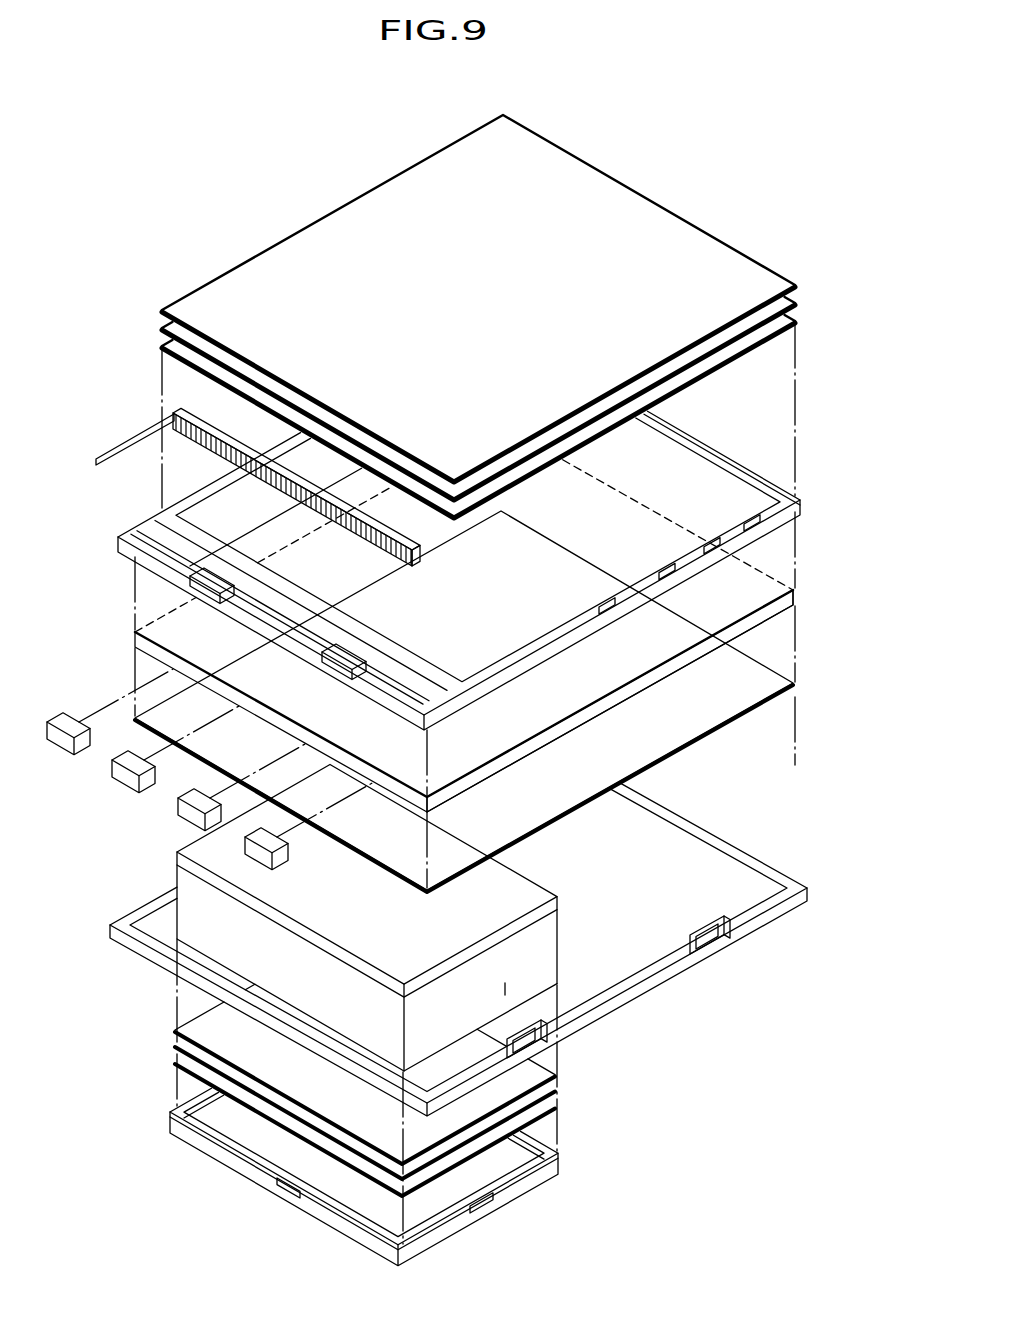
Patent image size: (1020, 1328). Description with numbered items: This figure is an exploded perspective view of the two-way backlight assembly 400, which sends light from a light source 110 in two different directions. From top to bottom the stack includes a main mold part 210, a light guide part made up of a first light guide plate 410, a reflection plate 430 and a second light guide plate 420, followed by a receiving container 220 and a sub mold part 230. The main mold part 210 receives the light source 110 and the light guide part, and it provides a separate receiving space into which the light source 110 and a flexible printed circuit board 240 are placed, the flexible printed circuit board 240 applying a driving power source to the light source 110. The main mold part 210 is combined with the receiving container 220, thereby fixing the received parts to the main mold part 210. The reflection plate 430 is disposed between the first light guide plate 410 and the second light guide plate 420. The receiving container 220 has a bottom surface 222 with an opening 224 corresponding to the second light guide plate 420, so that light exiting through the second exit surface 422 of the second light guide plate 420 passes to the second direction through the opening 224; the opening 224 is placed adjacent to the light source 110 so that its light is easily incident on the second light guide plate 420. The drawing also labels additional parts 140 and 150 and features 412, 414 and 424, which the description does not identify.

The two-way backlight assembly 400 is at (333, 170).
The display panel 140 is at (800, 287).
The main mold part 210 is at (768, 463).
The flexible printed circuit board 240 is at (398, 562).
The upper surface of light guide plate 412 is at (748, 587).
The first light guide plate 410 is at (796, 597).
The side surface of light guide plate 414 is at (760, 623).
The reflection plate 430 is at (762, 688).
The light source 110 is at (66, 722).
The upper surface of light guide block 424 is at (205, 858).
The second light guide plate 420 is at (177, 855).
The second exit surface 422 is at (257, 913).
The receiving container 220 is at (750, 921).
The bottom surface 222 is at (620, 962).
The opening 224 is at (505, 988).
The optical sheets 150 is at (563, 1078).
The sub mold part 230 is at (556, 1156).